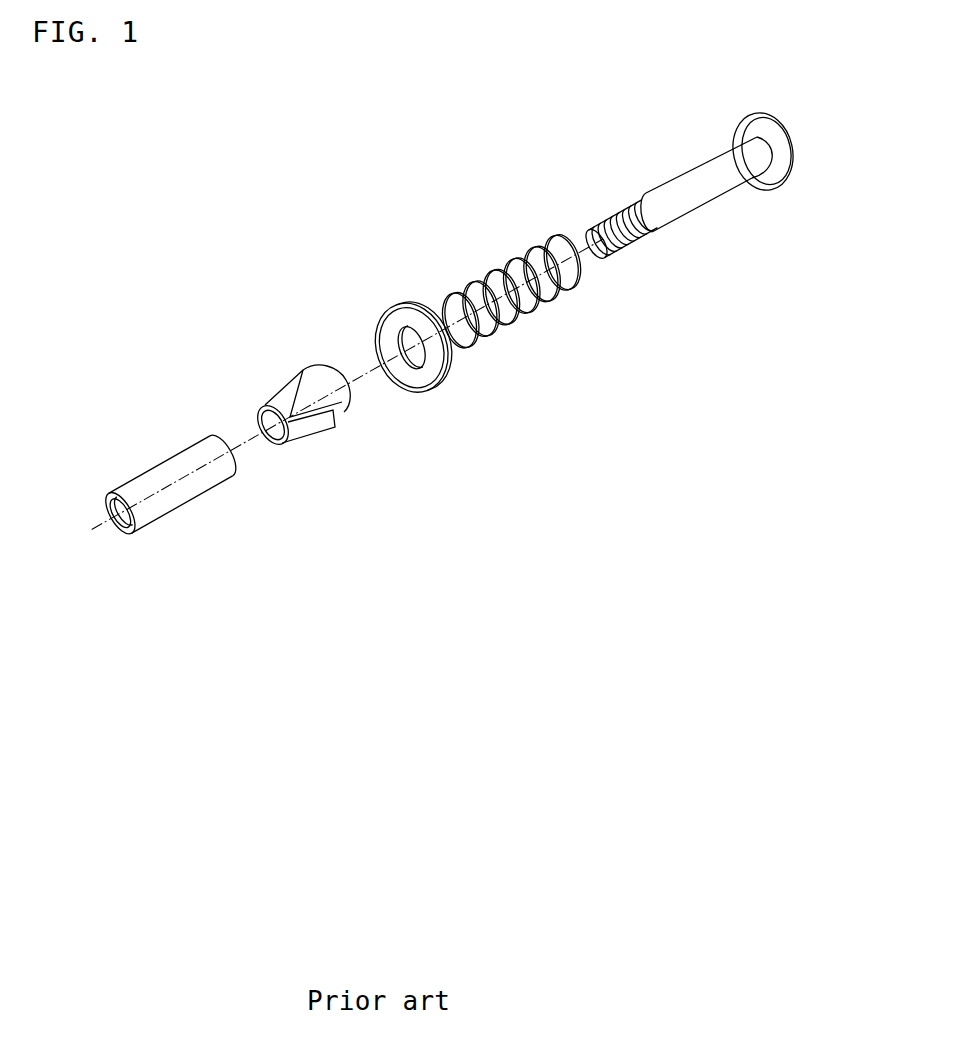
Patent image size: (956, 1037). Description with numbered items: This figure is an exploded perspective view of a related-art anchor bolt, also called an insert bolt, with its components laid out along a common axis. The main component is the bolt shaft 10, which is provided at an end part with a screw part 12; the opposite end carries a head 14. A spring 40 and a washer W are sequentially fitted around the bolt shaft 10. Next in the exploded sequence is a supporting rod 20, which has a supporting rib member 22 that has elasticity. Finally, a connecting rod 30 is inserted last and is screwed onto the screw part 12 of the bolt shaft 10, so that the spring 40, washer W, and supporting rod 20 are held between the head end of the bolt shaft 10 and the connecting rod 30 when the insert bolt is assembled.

The bolt shaft 10 is at (667, 191).
The screw part 12 is at (612, 215).
The bolt head 14 is at (792, 160).
The spring 40 is at (497, 268).
The washer W is at (388, 304).
The supporting rod 20 is at (348, 412).
The supporting rib member 22 is at (300, 373).
The connecting rod 30 is at (163, 470).